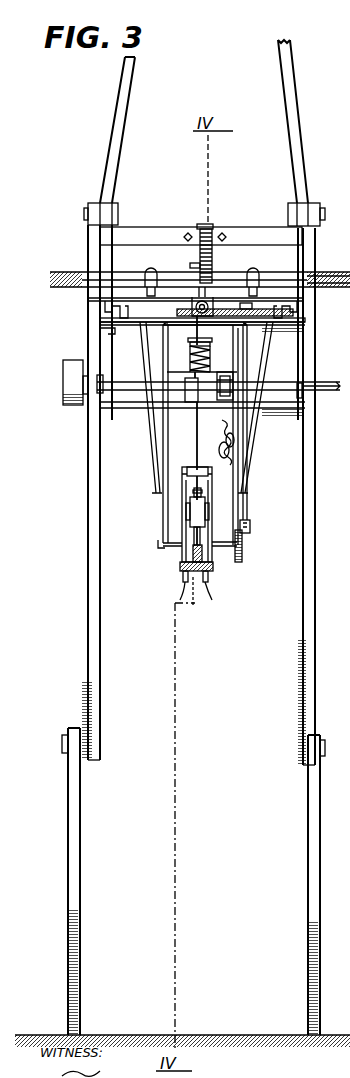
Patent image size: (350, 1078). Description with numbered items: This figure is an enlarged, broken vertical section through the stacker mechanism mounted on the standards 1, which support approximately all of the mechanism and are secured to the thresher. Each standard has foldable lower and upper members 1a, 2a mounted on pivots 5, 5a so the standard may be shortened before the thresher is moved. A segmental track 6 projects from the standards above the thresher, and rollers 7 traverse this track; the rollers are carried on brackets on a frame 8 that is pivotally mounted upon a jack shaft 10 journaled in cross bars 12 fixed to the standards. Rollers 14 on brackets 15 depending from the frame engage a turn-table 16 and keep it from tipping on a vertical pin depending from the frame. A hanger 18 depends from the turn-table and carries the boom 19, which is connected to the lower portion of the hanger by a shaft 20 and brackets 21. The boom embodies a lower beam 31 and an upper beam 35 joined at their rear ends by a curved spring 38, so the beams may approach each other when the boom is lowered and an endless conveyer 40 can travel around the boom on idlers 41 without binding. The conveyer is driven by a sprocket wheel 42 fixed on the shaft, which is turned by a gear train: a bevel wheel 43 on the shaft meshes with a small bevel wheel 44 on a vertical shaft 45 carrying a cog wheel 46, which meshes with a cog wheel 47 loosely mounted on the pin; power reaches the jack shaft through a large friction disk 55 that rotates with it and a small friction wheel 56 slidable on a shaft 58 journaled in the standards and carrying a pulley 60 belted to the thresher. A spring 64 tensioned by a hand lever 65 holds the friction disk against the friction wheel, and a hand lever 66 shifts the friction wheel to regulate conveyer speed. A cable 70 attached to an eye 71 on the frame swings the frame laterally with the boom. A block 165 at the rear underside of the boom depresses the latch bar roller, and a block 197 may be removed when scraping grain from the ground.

The standards 1 is at (300, 708).
The lower member 1a is at (305, 888).
The upper member 2a is at (280, 75).
The pivot 5 is at (62, 746).
The pivot 5a is at (85, 211).
The segmental track 6 is at (76, 274).
The rollers 7 is at (150, 278).
The frame 8 is at (100, 298).
The jack shaft 10 is at (201, 228).
The cross bars 12 is at (306, 239).
The rollers 14 is at (115, 318).
The brackets 15 is at (115, 330).
The turn-table 16 is at (303, 314).
The hanger 18 is at (160, 456).
The boom 19 is at (208, 577).
The shaft 20 is at (175, 552).
The brackets 21 is at (172, 568).
The lower beam 31 is at (178, 578).
The upper beam 35 is at (183, 477).
The curved spring 38 is at (183, 500).
The endless conveyer 40 is at (197, 468).
The idlers 41 is at (205, 505).
The sprocket wheel 42 is at (196, 537).
The bevel wheel 43 is at (240, 560).
The small bevel wheel 44 is at (246, 533).
The vertical shaft 45 is at (248, 511).
The cog wheel 46 is at (263, 336).
The cog wheel 47 is at (216, 330).
The friction disk 55 is at (232, 379).
The friction wheel 56 is at (232, 391).
The shaft 58 is at (322, 394).
The pulley 60 is at (70, 399).
The spring 64 is at (188, 362).
The hand lever 65 is at (188, 346).
The hand lever 66 is at (236, 456).
The cable 70 is at (316, 280).
The eye 71 is at (198, 300).
The block 165 is at (180, 598).
The block 197 is at (207, 578).